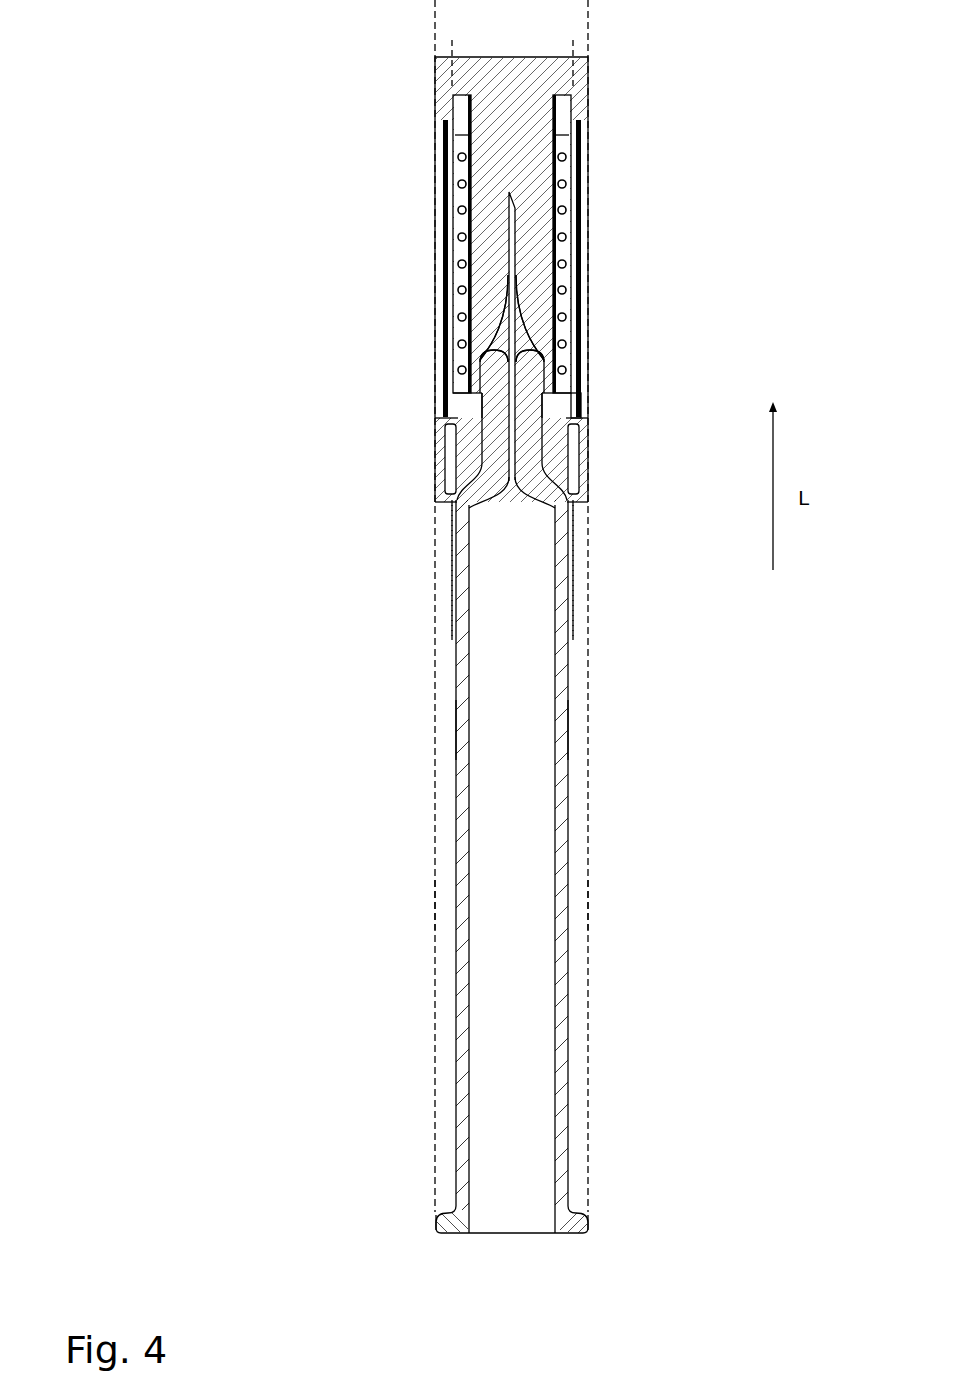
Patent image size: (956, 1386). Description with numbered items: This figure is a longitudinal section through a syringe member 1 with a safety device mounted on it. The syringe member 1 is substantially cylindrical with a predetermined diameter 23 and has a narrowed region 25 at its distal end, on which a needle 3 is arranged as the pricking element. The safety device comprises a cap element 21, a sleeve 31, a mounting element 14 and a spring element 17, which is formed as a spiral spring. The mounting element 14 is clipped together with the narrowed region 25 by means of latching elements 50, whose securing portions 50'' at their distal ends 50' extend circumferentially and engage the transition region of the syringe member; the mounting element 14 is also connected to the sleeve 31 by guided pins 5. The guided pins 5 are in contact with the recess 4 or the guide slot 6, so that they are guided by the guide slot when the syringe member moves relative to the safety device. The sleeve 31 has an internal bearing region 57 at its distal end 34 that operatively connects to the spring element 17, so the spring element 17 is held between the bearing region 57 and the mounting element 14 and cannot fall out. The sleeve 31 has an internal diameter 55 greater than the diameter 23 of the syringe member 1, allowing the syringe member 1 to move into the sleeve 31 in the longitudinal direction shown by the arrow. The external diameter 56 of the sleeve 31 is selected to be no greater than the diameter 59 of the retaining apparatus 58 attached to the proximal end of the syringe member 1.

The syringe member 1 is at (561, 650).
The needle 3 is at (514, 250).
The recess 4 is at (341, 380).
The guide slot 6 is at (611, 345).
The guided pins 5 is at (555, 400).
The mounting element 14 is at (583, 403).
The spring element 17 is at (583, 312).
The cap element 21 is at (588, 58).
The diameter of the syringe member 23 is at (610, 730).
The narrowed region 25 is at (398, 460).
The sleeve 31 is at (587, 132).
The distal end of the sleeve 34 is at (365, 140).
The latching elements 50 is at (433, 404).
The distal end of the latching elements 50' is at (426, 300).
The securing portions 50'' is at (462, 315).
The internal diameter of the sleeve 55 is at (412, 593).
The external diameter of the sleeve 56 is at (395, 903).
The bearing region 57 is at (445, 120).
The retaining apparatus 58 is at (580, 1232).
The diameter of the retaining apparatus 59 is at (393, 1223).